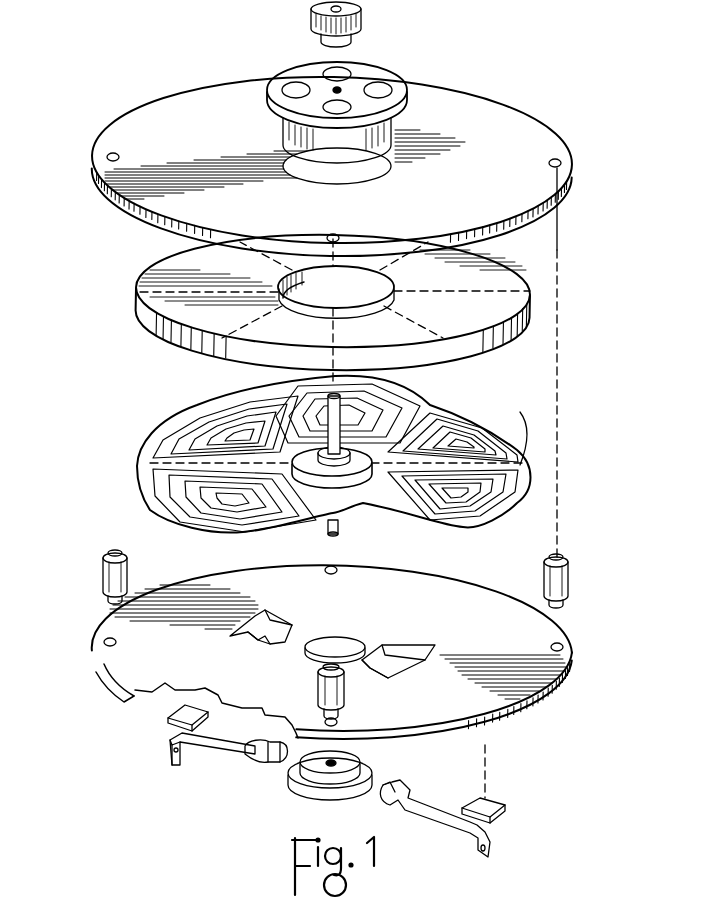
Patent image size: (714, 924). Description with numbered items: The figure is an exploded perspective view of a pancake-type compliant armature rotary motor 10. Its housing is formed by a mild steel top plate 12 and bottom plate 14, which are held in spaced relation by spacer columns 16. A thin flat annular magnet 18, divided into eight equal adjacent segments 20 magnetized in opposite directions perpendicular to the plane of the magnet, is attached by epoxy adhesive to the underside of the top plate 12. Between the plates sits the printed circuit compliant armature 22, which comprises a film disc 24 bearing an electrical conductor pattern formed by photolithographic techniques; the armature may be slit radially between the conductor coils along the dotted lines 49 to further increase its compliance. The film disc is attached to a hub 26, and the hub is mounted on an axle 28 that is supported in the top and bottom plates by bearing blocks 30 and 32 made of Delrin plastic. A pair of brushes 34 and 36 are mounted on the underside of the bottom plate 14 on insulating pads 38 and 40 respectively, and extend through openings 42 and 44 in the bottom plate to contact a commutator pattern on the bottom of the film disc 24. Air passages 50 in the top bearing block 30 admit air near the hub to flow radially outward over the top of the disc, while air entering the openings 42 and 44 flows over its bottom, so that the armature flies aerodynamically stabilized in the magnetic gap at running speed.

The motor 10 is at (148, 75).
The top plate 12 is at (133, 120).
The bottom plate 14 is at (115, 672).
The spacer columns 16 is at (103, 582).
The annular magnet 18 is at (140, 300).
The segments 20 is at (185, 262).
The compliant armature 22 is at (146, 424).
The film disc 24 is at (138, 483).
The hub 26 is at (340, 482).
The axle 28 is at (282, 400).
The bearing block 30 is at (312, 72).
The bearing block 32 is at (290, 785).
The brush 34 is at (210, 758).
The brush 36 is at (442, 812).
The insulating pad 38 is at (168, 715).
The insulating pad 40 is at (492, 803).
The opening 42 is at (255, 641).
The opening 44 is at (405, 663).
The dotted lines 49 is at (430, 407).
The air passages 50 is at (345, 102).